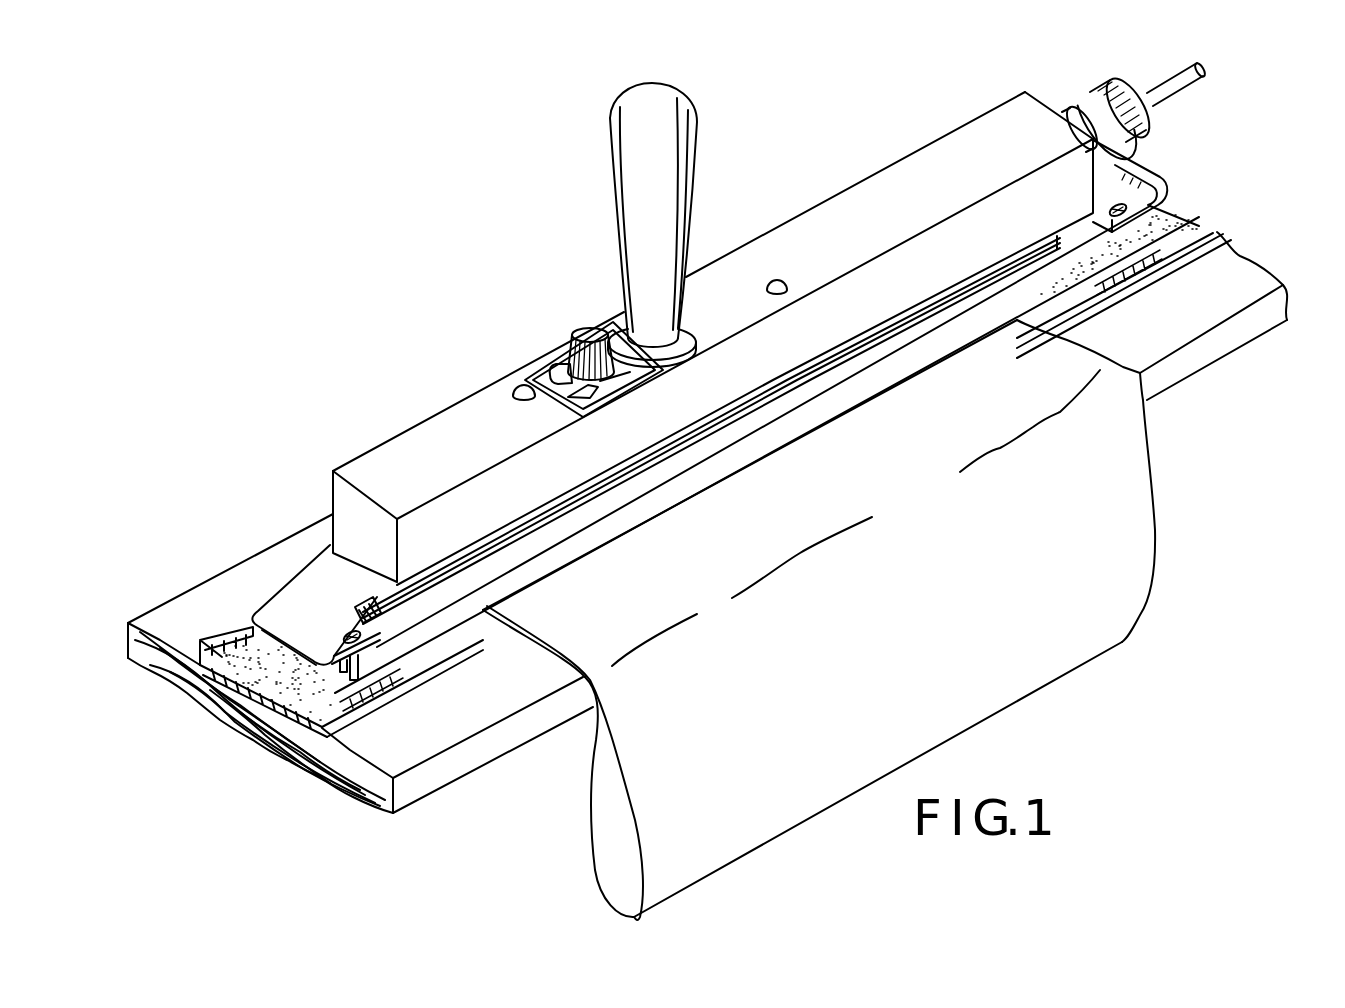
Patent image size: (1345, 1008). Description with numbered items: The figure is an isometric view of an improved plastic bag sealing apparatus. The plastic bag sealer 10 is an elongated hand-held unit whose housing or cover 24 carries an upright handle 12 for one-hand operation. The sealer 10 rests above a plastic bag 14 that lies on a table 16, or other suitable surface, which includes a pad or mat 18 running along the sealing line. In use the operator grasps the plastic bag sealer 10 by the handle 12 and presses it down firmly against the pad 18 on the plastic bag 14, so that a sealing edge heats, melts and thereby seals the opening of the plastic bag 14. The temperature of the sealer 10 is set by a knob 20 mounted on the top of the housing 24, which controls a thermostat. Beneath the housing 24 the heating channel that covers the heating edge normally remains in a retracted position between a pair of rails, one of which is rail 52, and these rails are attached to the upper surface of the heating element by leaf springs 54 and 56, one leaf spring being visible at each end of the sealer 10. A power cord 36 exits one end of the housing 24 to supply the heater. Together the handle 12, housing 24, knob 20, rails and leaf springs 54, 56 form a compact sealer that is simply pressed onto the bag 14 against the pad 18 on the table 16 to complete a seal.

The plastic bag sealer 10 is at (903, 160).
The handle 12 is at (610, 122).
The plastic bag 14 is at (1152, 518).
The table 16 is at (1283, 283).
The pad or mat 18 is at (1217, 232).
The knob 20 is at (572, 340).
The housing or cover 24 is at (466, 399).
The power cable 36 is at (1170, 78).
The rail 52 is at (367, 662).
The leaf spring 54 is at (1145, 168).
The leaf spring 56 is at (302, 593).